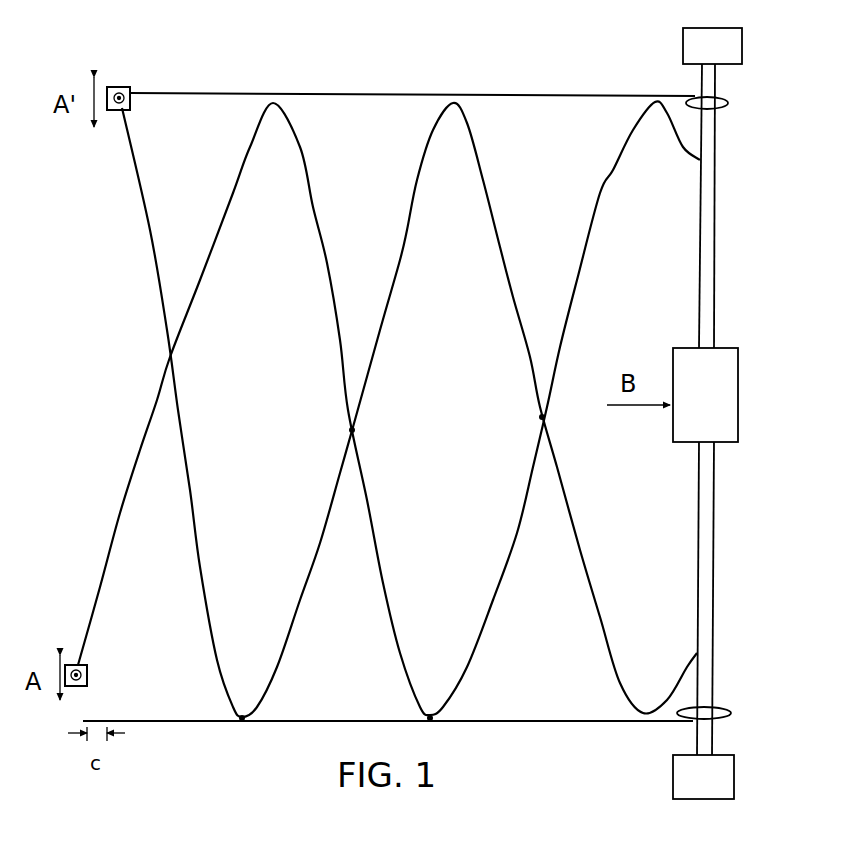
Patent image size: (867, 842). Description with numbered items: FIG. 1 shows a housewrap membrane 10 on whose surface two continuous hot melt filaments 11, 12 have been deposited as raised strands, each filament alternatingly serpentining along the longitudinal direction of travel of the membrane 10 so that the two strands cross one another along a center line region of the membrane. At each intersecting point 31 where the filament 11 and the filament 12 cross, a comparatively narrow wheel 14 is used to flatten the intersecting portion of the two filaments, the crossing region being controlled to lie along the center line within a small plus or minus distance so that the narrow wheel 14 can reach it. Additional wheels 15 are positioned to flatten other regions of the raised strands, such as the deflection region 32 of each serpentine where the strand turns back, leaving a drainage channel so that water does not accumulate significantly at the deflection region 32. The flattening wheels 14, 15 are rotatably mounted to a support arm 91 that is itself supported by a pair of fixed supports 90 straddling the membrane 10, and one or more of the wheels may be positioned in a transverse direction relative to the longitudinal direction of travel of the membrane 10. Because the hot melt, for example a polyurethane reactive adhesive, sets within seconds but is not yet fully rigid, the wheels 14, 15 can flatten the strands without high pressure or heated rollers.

The membrane 10 is at (205, 100).
The filament 11 is at (148, 235).
The filament 12 is at (143, 450).
The wheel 14 is at (683, 347).
The wheels 15 is at (690, 99).
The intersecting point 31 is at (540, 418).
The deflection region 32 is at (438, 720).
The fixed supports 90 is at (693, 43).
The support arm 91 is at (707, 236).